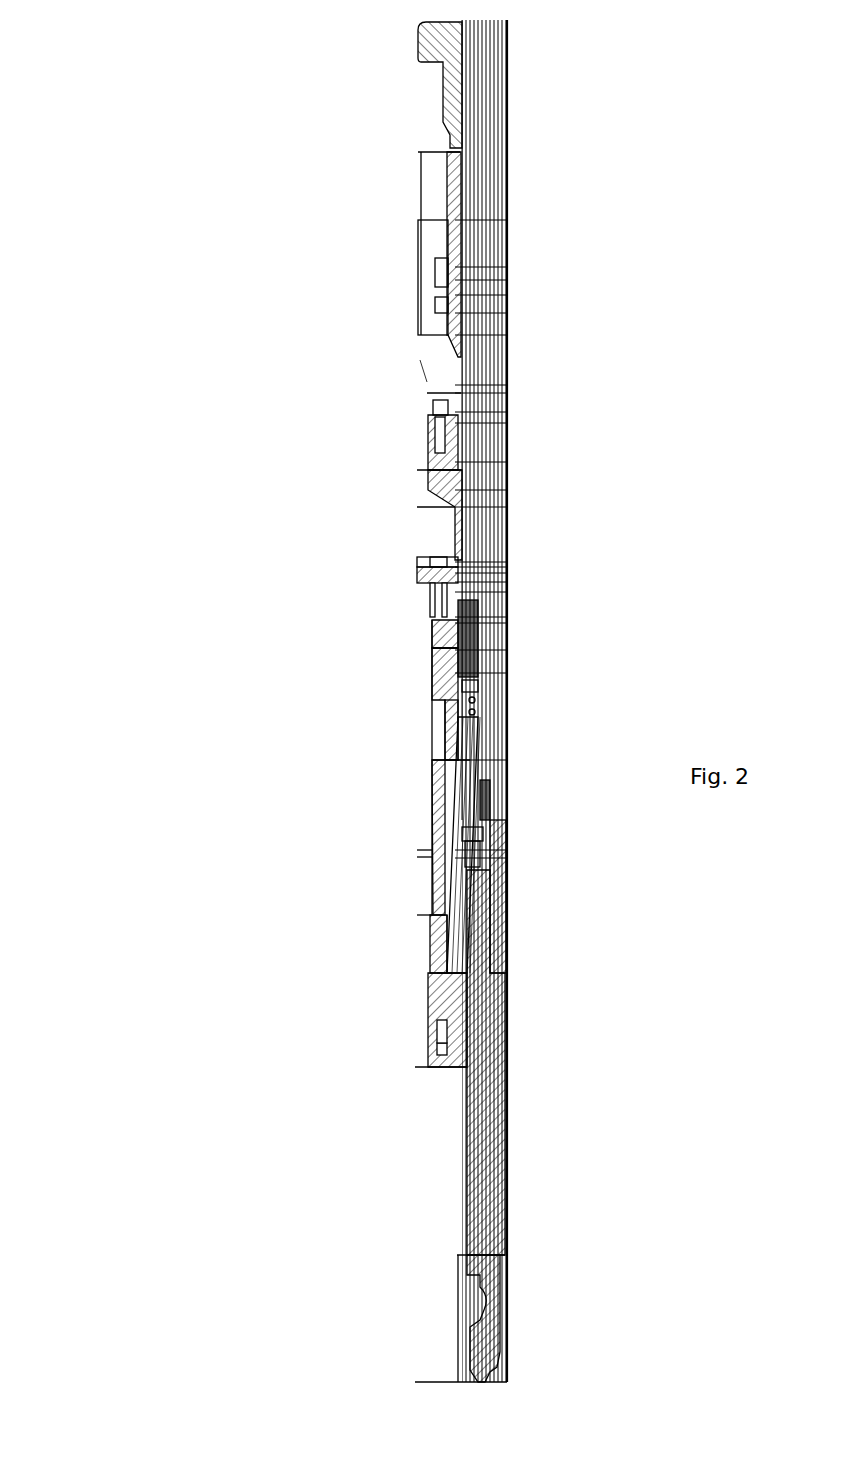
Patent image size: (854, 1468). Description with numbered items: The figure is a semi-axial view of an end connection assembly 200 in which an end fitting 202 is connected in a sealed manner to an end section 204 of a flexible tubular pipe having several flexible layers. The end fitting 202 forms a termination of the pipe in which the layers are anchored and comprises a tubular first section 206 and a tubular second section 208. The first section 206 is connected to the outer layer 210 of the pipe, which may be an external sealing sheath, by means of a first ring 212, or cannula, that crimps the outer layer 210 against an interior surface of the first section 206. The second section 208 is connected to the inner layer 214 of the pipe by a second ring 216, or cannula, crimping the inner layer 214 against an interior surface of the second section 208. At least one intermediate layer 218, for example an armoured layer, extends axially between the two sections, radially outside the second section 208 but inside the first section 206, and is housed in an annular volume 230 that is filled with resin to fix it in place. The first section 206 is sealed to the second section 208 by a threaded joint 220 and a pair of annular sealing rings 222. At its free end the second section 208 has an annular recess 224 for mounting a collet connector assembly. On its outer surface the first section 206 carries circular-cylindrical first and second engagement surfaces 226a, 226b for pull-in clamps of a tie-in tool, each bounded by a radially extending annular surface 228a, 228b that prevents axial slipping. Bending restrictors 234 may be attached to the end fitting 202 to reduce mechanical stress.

The end connection assembly 200 is at (233, 595).
The end fitting 202 is at (223, 980).
The end section 204 is at (556, 237).
The first section 206 is at (443, 712).
The second section 208 is at (490, 1033).
The outer layer 210 is at (465, 474).
The first ring 212 is at (472, 633).
The inner layer 214 is at (522, 871).
The second ring 216 is at (483, 857).
The intermediate layer 218 is at (467, 783).
The threaded joint 220 is at (410, 973).
The annular sealing rings 222 is at (405, 1021).
The annular recess 224 is at (455, 1306).
The first engagement surface 226a is at (430, 897).
The second engagement surface 226b is at (430, 662).
The radially extending annular surface 228a is at (422, 913).
The radially extending annular surface 228b is at (430, 623).
The annular volume 230 is at (447, 950).
The bending restrictors 234 is at (443, 73).